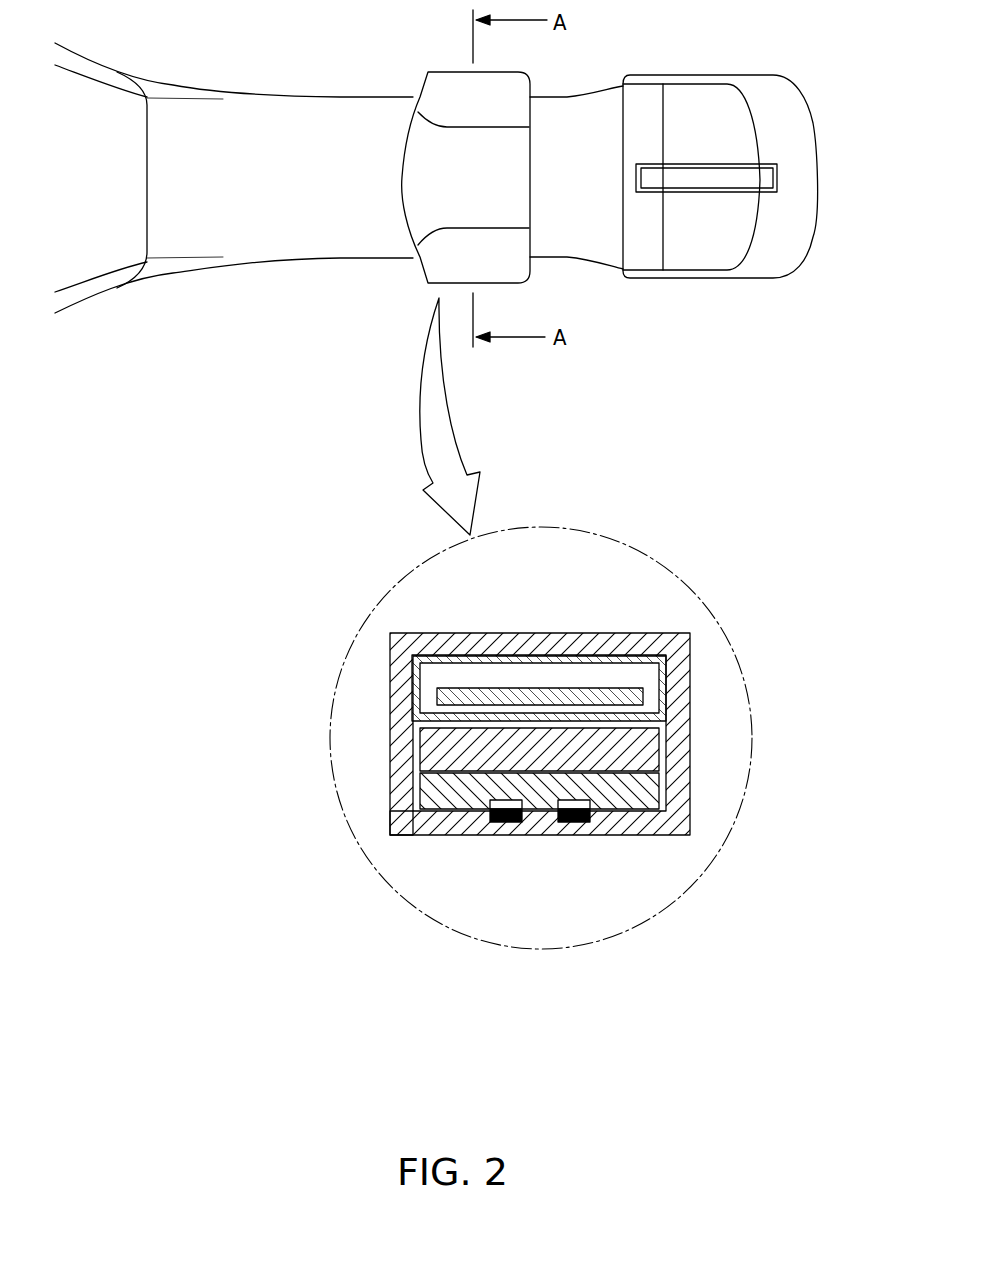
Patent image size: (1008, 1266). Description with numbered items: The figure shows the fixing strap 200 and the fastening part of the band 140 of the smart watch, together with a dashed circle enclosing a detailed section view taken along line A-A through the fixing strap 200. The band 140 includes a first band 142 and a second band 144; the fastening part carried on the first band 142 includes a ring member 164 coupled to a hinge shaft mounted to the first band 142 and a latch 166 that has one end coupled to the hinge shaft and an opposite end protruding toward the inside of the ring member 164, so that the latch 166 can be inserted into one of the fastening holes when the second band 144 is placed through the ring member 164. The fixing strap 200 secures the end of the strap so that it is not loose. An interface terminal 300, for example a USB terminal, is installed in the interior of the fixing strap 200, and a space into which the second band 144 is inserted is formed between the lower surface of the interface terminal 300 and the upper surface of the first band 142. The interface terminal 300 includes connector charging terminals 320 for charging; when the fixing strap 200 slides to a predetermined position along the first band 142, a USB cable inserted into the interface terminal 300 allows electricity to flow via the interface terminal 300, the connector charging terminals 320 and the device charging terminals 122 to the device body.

The fixing strap 200 is at (421, 74).
The ring member 164 is at (777, 250).
The latch 166 is at (723, 173).
The interface terminal 300 is at (573, 677).
The band 140 is at (645, 768).
The second band 144 is at (637, 748).
The first band 142 is at (640, 793).
The connector charging terminals 320 is at (573, 823).
The device charging terminals 122 is at (485, 801).